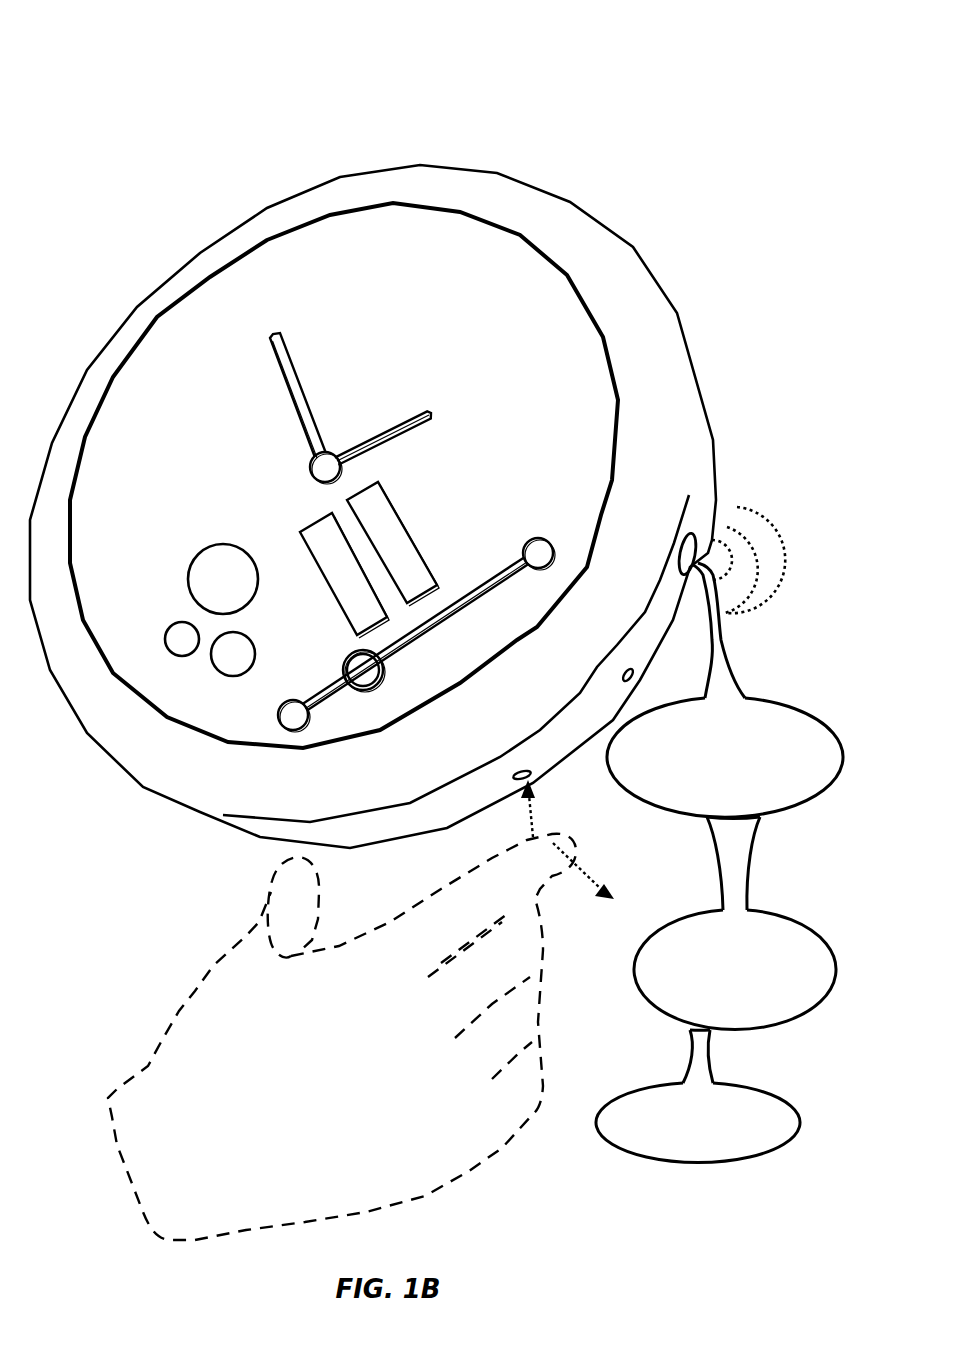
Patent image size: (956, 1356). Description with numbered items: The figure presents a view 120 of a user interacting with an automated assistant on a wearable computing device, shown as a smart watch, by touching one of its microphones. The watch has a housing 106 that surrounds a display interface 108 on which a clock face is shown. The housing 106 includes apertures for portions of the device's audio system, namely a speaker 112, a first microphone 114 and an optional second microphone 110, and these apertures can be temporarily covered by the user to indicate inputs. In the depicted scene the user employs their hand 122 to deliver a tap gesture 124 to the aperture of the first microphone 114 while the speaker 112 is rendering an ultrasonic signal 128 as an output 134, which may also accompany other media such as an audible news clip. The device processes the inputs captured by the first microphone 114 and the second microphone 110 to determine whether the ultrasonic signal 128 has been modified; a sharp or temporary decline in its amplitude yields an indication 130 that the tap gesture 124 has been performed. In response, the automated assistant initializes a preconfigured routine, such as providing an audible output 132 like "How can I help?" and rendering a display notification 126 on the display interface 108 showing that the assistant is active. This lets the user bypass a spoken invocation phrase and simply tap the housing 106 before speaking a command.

The housing 106 is at (123, 317).
The display interface 108 is at (331, 510).
The second microphone 110 is at (623, 682).
The speaker 112 is at (686, 577).
The first microphone 114 is at (517, 775).
The view 120 is at (124, 76).
The hand 122 is at (342, 1037).
The tap gesture 124 is at (588, 882).
The display notification 126 is at (174, 548).
The ultrasonic signal 128 is at (763, 698).
The indication 130 is at (763, 910).
The audible output 132 is at (763, 1087).
The output 134 is at (763, 510).